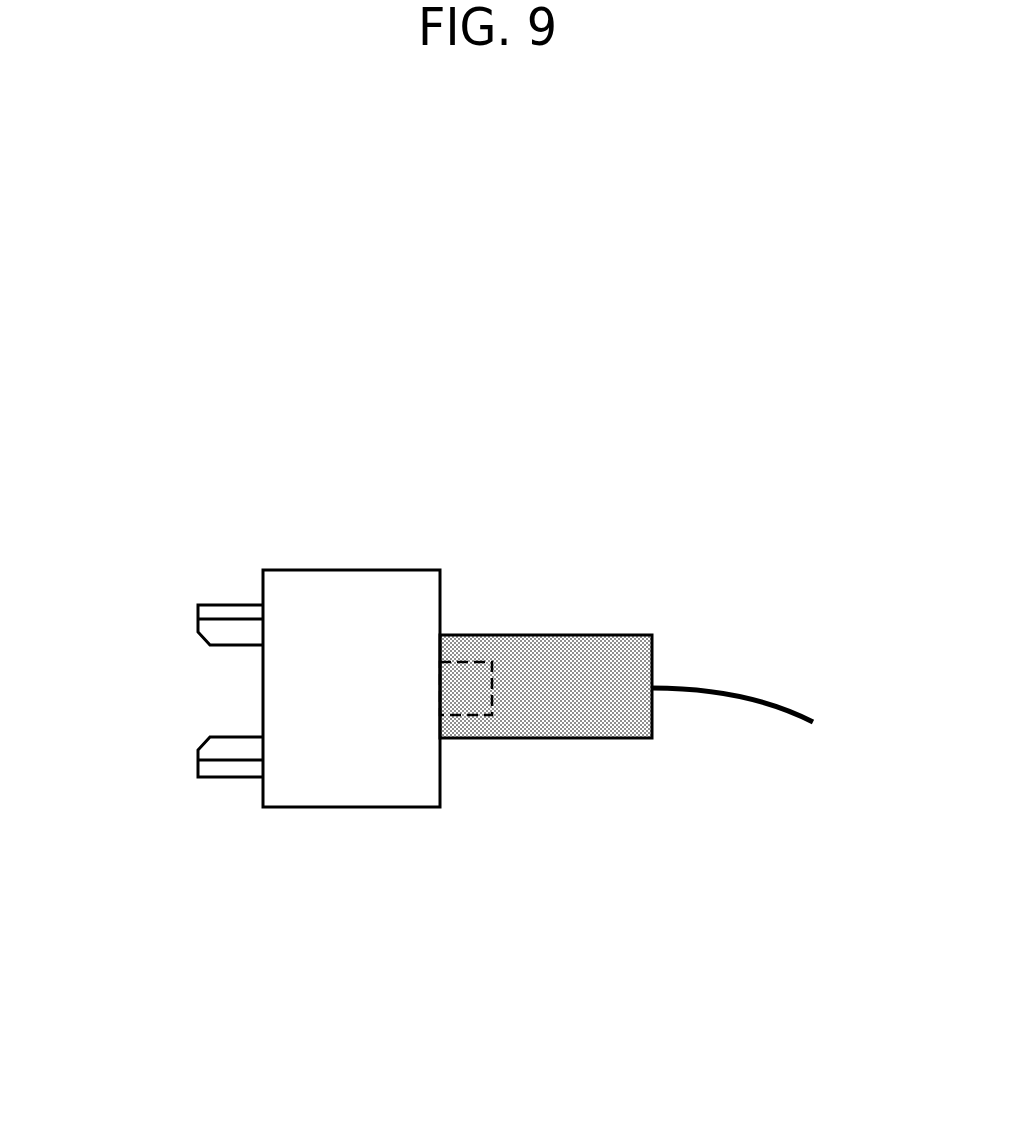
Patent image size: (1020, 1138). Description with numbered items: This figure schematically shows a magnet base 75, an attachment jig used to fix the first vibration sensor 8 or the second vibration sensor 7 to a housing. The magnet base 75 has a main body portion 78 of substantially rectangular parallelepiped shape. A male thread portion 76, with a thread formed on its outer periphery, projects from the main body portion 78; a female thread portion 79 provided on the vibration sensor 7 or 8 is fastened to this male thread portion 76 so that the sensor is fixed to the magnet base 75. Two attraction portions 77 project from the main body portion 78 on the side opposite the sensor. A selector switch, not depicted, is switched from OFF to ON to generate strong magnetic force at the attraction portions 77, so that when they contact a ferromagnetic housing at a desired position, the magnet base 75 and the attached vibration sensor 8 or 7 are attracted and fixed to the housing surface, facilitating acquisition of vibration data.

The magnet base 75 is at (377, 680).
The main body portion 78 is at (390, 808).
The attraction portion 77 is at (218, 778).
The second vibration sensor 7 is at (653, 604).
The first vibration sensor 8 is at (627, 635).
The male thread portion 76 is at (472, 738).
The female thread portion 79 is at (462, 662).